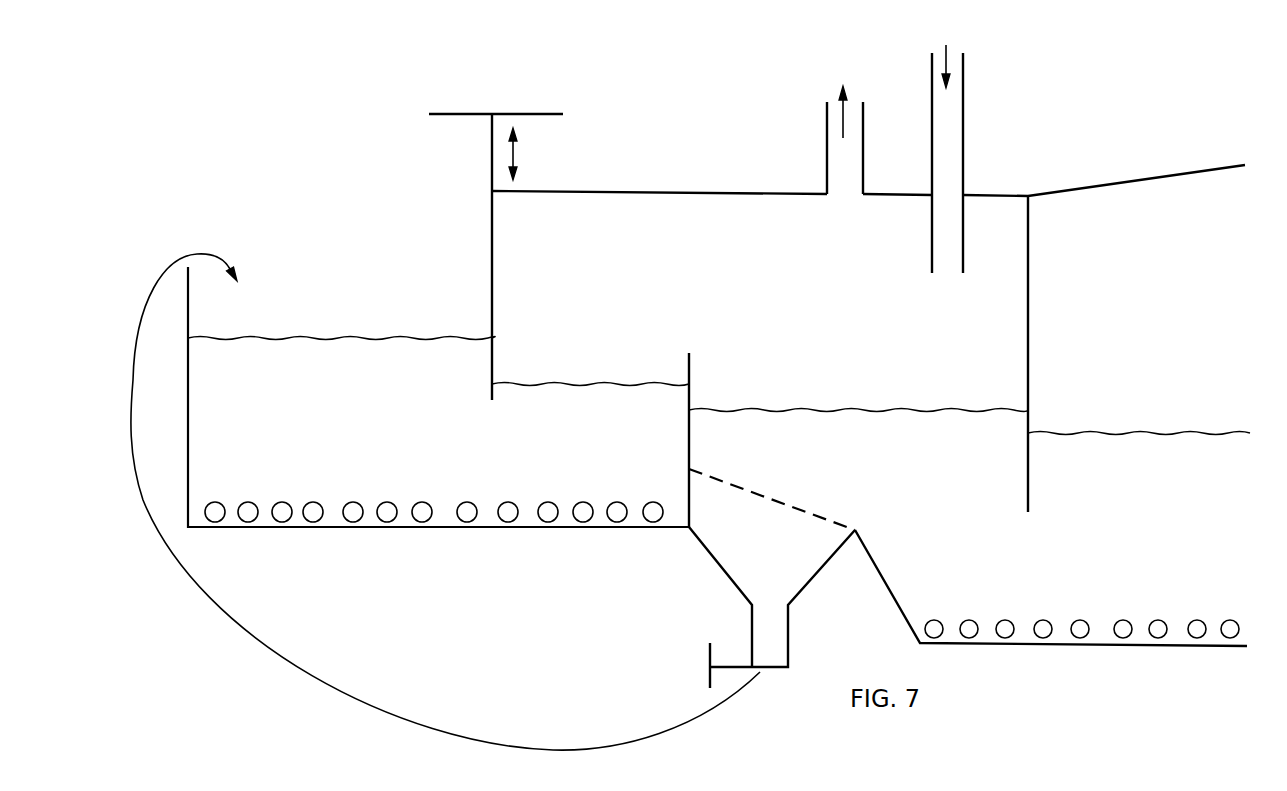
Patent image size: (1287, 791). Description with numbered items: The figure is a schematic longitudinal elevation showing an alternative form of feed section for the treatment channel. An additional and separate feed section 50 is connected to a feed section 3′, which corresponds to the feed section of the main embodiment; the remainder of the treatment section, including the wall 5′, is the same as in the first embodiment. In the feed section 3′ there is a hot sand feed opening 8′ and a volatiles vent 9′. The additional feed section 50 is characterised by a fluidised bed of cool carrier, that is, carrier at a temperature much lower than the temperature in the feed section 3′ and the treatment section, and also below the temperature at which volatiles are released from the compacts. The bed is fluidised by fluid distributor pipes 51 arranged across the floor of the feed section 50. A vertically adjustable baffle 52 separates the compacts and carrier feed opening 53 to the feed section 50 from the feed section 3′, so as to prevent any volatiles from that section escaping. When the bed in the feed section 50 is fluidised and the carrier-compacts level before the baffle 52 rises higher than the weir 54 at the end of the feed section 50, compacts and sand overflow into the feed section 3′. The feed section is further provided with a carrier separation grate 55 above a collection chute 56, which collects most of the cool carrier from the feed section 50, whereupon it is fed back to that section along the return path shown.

The additional feed section 50 is at (411, 451).
The fluid distributor pipes 51 is at (585, 521).
The vertically adjustable baffle 52 is at (492, 268).
The compacts and carrier feed opening 53 is at (356, 286).
The weir 54 is at (691, 362).
The carrier separation grate 55 is at (768, 497).
The collection chute 56 is at (719, 566).
The feed section 3′ is at (895, 466).
The chamber wall 5′ is at (1033, 357).
The hot sand feed opening 8′ is at (963, 165).
The volatiles vent 9′ is at (827, 150).